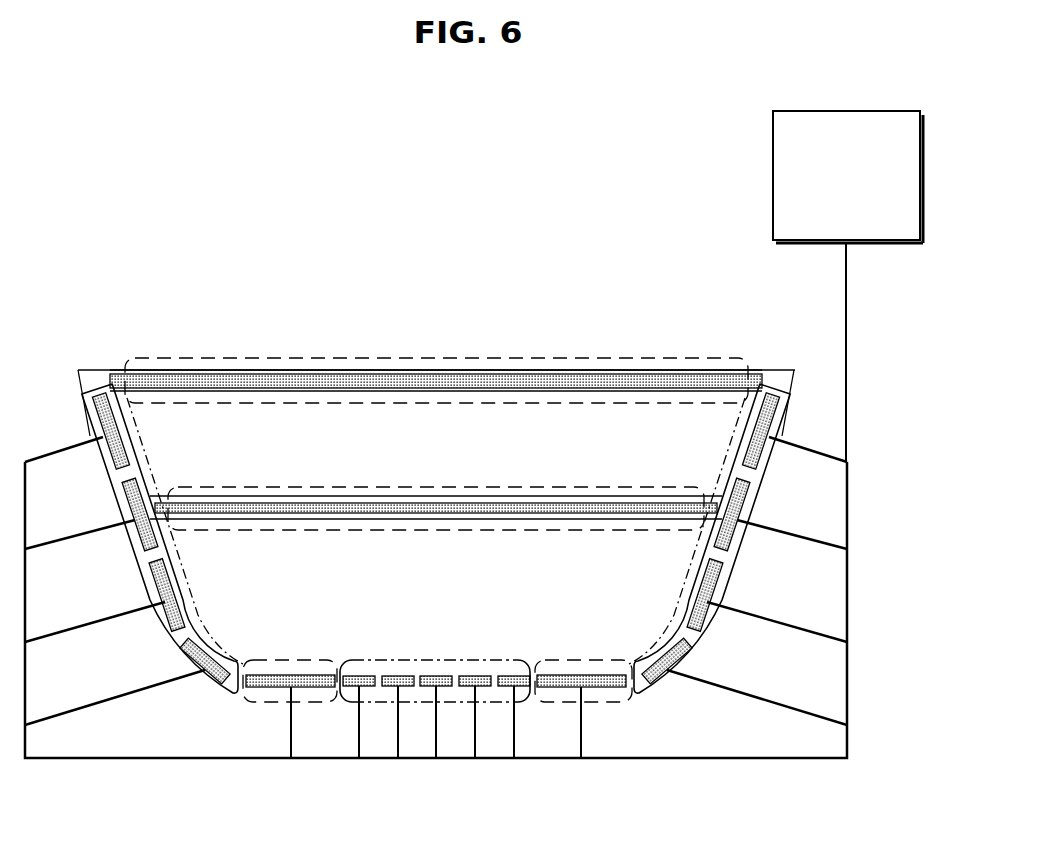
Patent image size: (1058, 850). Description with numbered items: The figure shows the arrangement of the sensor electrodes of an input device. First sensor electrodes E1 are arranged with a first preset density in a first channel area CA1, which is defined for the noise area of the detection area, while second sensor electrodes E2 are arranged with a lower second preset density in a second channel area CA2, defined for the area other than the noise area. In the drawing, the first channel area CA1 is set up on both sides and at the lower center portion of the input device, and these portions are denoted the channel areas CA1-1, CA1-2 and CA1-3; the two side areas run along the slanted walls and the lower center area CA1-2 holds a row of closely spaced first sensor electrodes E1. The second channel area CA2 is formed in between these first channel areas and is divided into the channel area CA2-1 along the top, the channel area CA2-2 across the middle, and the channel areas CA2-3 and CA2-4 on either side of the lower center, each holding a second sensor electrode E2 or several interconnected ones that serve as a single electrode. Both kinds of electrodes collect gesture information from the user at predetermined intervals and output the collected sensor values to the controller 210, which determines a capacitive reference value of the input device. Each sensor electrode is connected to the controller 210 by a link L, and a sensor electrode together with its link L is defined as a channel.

The controller 210 is at (892, 110).
The 2-1 channel area CA2-1 is at (356, 361).
The second channel area CA2 is at (452, 360).
The second sensor electrode E2 is at (516, 384).
The 2-2 channel area CA2-2 is at (356, 490).
The 1-1 channel area CA1-1 is at (190, 606).
The 1-3 channel area CA1-3 is at (682, 606).
The first channel area CA1 is at (212, 692).
The 2-3 channel area CA2-3 is at (283, 663).
The 2-4 channel area CA2-4 is at (572, 663).
The 1-2 channel area CA1-2 is at (421, 663).
The first sensor electrode E1 is at (523, 686).
The link L is at (616, 760).